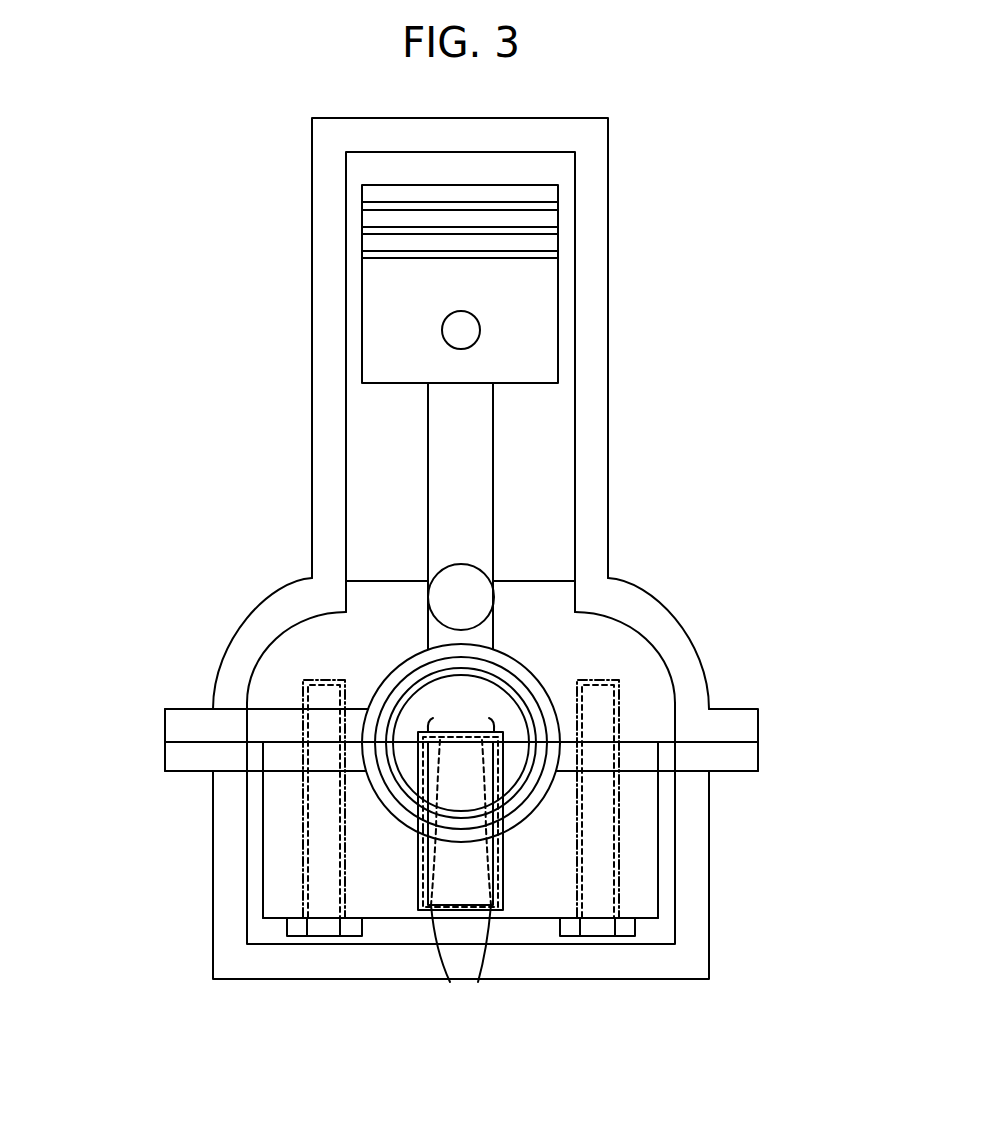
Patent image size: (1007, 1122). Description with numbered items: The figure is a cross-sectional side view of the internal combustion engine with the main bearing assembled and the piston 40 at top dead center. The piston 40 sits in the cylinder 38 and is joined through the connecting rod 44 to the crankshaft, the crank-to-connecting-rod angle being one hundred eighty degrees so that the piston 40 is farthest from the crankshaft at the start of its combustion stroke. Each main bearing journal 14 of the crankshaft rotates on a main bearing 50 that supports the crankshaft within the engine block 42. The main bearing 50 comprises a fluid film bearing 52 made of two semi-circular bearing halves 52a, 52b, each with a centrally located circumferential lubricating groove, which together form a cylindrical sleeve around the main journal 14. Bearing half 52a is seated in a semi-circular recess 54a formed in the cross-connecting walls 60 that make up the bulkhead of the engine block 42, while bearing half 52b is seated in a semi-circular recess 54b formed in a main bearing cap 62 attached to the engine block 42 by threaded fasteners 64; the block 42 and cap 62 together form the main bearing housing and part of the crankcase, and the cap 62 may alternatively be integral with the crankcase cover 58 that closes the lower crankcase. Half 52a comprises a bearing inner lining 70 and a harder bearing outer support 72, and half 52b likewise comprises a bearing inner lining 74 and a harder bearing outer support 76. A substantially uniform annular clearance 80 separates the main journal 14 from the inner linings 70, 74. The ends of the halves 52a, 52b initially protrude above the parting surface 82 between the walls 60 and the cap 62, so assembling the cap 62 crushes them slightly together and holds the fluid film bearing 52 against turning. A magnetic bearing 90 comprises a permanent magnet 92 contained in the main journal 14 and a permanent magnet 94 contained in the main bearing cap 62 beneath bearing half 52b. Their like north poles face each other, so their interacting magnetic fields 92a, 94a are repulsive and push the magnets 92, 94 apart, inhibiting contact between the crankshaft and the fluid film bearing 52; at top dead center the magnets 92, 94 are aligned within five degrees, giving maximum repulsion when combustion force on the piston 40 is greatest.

The main bearing journal 14 is at (447, 705).
The cylinder 38 is at (378, 423).
The piston 40 is at (446, 297).
The engine block 42 is at (592, 373).
The connecting rod 44 is at (446, 420).
The main bearing 50 is at (460, 858).
The fluid film bearing 52 is at (112, 696).
The bearing half 52a is at (360, 719).
The bearing half 52b is at (360, 760).
The semi-circular recess 54a is at (391, 674).
The semi-circular recess 54b is at (373, 797).
The crankcase cover 58 is at (233, 948).
The cross-connecting walls 60 is at (259, 701).
The main bearing cap 62 is at (624, 780).
The threaded fasteners 64 is at (325, 828).
The bearing inner lining 70 is at (483, 663).
The bearing outer support 72 is at (513, 668).
The bearing inner lining 74 is at (518, 793).
The bearing outer support 76 is at (503, 822).
The annular clearance 80 is at (515, 695).
The parting surface 82 is at (723, 742).
The magnetic bearing 90 is at (403, 920).
The permanent magnet 92 is at (460, 783).
The magnetic field 92a is at (461, 720).
The permanent magnet 94 is at (460, 868).
The magnetic field 94a is at (461, 958).